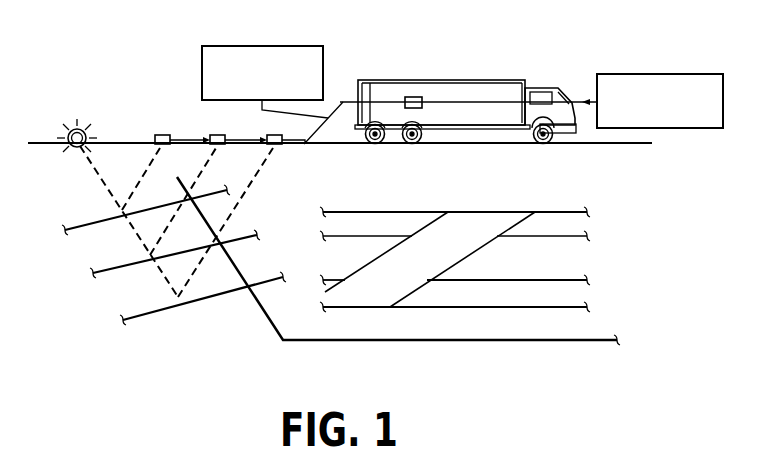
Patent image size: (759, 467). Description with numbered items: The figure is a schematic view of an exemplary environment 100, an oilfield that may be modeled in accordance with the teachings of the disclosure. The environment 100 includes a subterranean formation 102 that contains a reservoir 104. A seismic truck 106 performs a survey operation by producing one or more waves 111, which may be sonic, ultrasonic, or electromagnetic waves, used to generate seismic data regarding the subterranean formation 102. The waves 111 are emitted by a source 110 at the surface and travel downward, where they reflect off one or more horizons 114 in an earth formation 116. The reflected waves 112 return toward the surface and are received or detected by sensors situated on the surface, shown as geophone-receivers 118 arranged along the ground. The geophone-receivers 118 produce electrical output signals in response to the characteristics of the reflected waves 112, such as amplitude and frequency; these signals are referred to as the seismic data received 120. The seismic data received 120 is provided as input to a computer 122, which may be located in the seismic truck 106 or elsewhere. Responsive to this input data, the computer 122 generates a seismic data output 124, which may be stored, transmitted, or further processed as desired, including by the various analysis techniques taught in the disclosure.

The environment 100 is at (650, 49).
The subterranean formation 102 is at (557, 200).
The reservoir 104 is at (561, 265).
The seismic truck 106 is at (525, 80).
The source 110 is at (70, 130).
The waves 111 is at (118, 208).
The reflected waves 112 is at (142, 182).
The horizons 114 is at (83, 225).
The earth formation 116 is at (262, 313).
The geophone-receivers 118 is at (270, 134).
The seismic data received 120 is at (240, 46).
The computer 122 is at (418, 97).
The seismic data output 124 is at (677, 74).